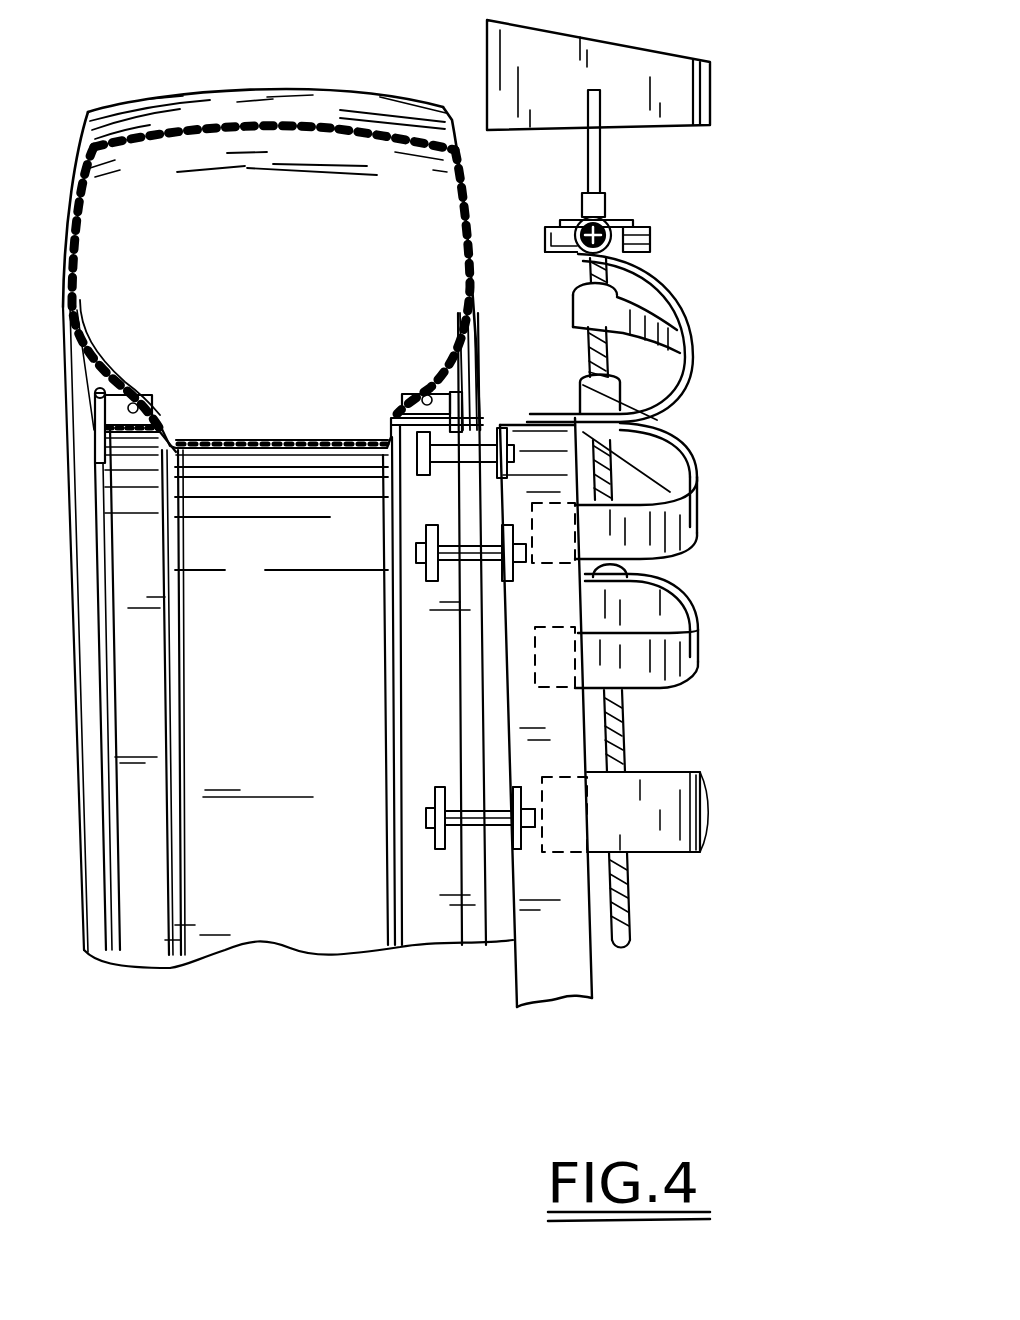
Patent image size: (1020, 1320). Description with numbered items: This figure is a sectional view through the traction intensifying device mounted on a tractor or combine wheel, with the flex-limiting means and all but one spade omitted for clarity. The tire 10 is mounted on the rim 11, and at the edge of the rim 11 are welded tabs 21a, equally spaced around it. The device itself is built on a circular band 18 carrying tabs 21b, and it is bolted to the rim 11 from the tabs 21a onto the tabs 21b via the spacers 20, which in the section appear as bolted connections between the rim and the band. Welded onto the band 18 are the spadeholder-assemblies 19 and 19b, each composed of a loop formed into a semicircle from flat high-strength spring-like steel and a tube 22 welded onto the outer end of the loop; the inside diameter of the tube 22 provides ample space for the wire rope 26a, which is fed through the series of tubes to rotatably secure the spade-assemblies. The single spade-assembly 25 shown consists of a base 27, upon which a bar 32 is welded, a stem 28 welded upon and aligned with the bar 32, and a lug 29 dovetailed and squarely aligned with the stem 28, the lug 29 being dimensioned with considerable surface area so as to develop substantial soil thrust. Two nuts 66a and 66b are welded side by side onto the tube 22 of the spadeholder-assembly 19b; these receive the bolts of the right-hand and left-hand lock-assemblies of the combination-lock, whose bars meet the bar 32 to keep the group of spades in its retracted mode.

The tire 10 is at (190, 110).
The rim 11 is at (256, 428).
The circular band 18 is at (570, 957).
The spadeholder-assembly 19 is at (693, 507).
The spadeholder-assembly 19b is at (690, 303).
The spacer 20 is at (470, 818).
The tab 21a is at (432, 795).
The tab 21b is at (523, 788).
The tube 22 is at (577, 363).
The spade-assembly 25 is at (678, 43).
The wire rope 26a is at (630, 740).
The base 27 is at (620, 215).
The stem 28 is at (607, 175).
The lug 29 is at (690, 97).
The bar 32 is at (582, 200).
The nut 66a is at (652, 250).
The nut 66b is at (709, 270).